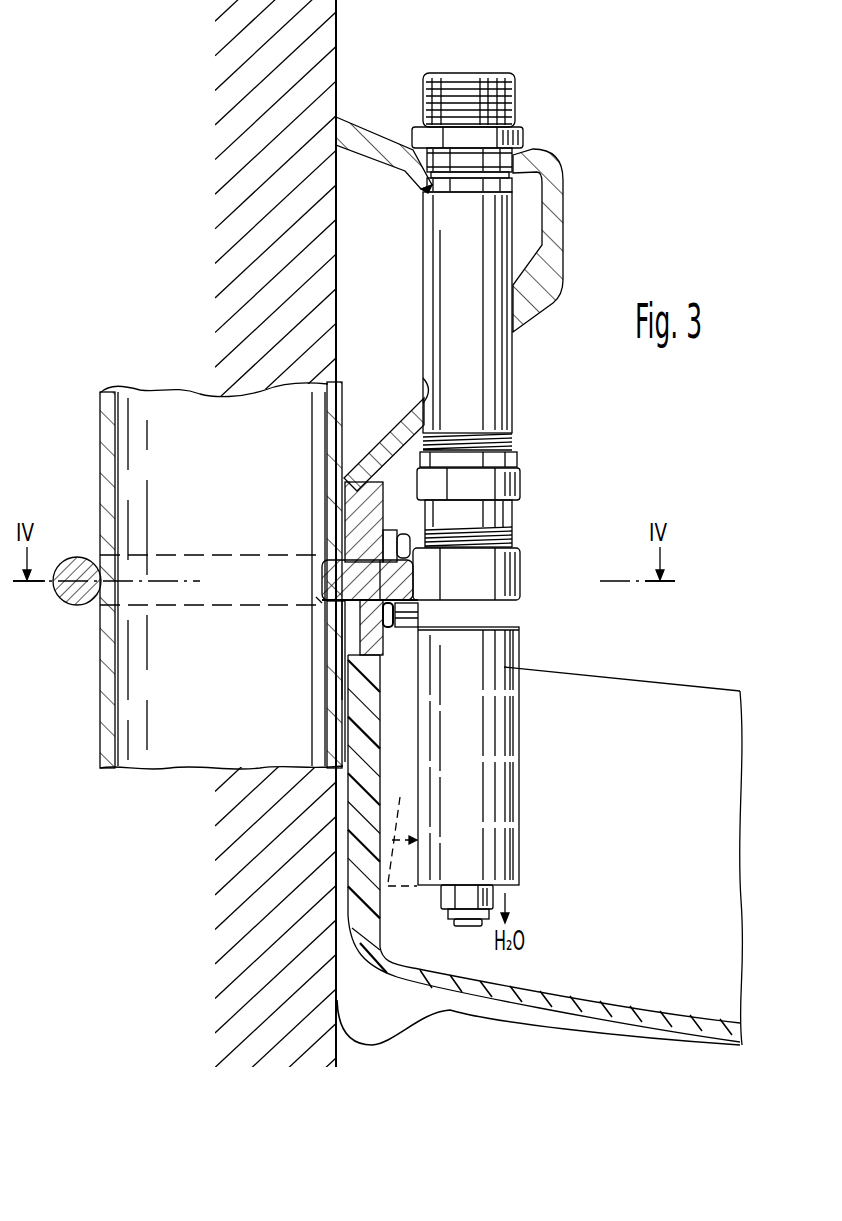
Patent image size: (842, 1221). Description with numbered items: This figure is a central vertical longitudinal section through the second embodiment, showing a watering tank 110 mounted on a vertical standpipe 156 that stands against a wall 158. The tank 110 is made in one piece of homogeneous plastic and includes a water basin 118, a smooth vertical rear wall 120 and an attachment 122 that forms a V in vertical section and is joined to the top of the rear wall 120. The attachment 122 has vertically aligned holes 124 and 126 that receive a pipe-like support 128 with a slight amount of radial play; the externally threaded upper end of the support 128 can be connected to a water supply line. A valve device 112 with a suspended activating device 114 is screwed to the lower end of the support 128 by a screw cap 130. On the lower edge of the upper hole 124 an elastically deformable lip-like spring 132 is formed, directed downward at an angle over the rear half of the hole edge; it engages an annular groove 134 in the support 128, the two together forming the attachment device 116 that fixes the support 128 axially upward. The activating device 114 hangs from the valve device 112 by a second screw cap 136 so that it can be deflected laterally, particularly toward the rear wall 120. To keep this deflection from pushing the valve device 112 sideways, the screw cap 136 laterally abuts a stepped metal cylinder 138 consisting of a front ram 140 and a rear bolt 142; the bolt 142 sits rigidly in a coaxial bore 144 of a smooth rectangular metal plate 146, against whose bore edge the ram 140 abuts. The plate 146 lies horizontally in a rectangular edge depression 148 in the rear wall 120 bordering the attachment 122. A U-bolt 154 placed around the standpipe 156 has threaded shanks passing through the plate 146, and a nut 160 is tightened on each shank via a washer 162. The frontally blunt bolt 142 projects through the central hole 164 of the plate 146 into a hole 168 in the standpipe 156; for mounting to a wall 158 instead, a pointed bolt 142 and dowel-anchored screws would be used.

The watering tank 110 is at (650, 664).
The valve device 112 is at (522, 510).
The activating device 114 is at (530, 749).
The attachment device 116 is at (408, 184).
The water basin 118 is at (510, 1005).
The rear wall 120 is at (348, 826).
The attachment 122 is at (573, 227).
The upper hole 124 is at (512, 160).
The lower hole 126 is at (426, 388).
The pipe-like support 128 is at (502, 380).
The screw cap 130 is at (517, 482).
The lip-like spring 132 is at (425, 190).
The annular groove 134 is at (512, 185).
The second screw cap 136 is at (522, 560).
The stepped metal cylinder 138 is at (317, 600).
The front ram 140 is at (390, 532).
The rear bolt 142 is at (317, 567).
The coaxial bore 144 is at (343, 620).
The metal plate 146 is at (372, 462).
The edge depression 148 is at (358, 483).
The U-bolt 154 is at (78, 557).
The standpipe 156 is at (110, 745).
The wall 158 is at (320, 50).
The nut 160 is at (420, 620).
The washer 162 is at (396, 629).
The central hole 164 is at (335, 603).
The hole in standpipe 168 is at (328, 543).